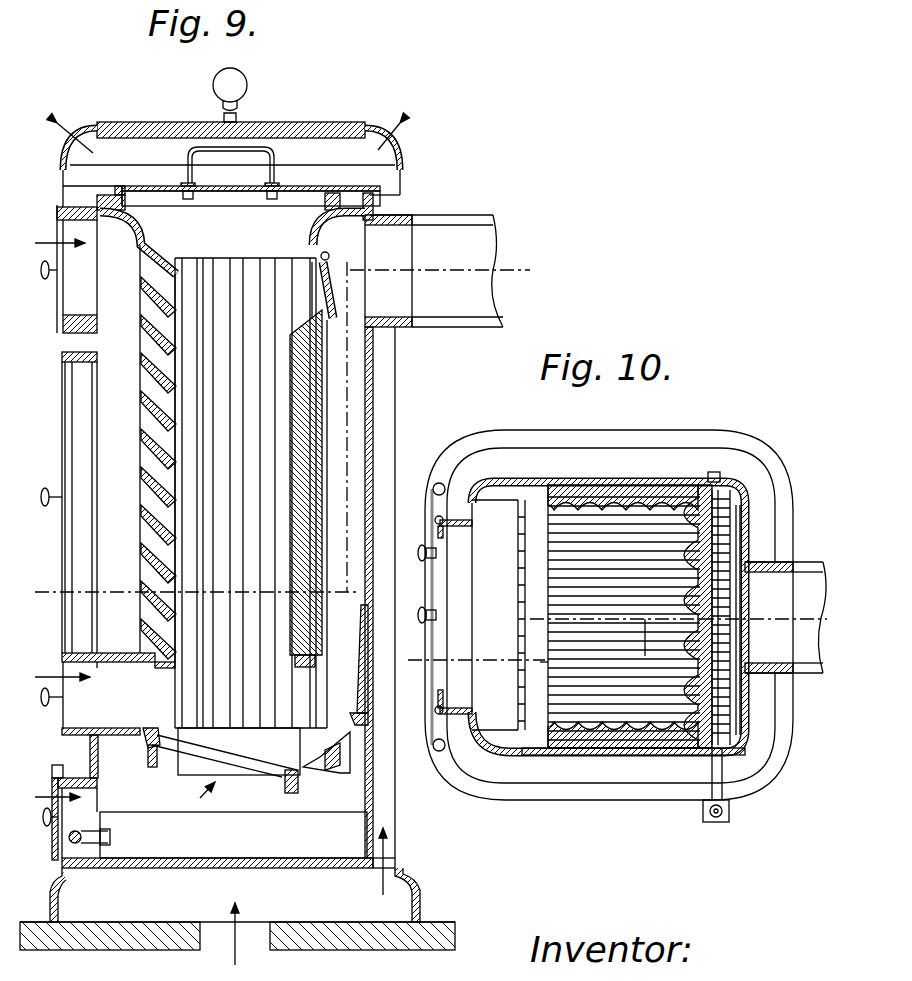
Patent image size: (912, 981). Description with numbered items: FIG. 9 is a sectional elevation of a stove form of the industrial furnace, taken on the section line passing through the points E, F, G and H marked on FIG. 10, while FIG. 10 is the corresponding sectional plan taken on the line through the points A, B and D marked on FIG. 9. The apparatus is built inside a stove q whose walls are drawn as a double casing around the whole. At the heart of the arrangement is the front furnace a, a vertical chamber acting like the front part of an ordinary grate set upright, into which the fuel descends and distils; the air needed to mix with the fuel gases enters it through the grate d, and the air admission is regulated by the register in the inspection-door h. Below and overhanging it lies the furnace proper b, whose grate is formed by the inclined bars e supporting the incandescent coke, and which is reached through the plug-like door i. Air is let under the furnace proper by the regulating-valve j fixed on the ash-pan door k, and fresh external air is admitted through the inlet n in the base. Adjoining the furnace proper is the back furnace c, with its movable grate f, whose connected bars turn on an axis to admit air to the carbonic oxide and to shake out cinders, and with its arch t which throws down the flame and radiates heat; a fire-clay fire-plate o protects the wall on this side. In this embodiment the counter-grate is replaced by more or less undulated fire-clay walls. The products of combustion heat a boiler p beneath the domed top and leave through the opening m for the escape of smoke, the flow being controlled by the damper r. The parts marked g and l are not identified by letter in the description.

In FIG. 9, the front furnace a is at (245, 493).
In FIG. 10, the front furnace a is at (629, 627).
In FIG. 9, the furnace proper b is at (212, 702).
In FIG. 9, the back furnace c is at (328, 487).
In FIG. 10, the back furnace c is at (751, 620).
In FIG. 9, the grate d is at (147, 453).
In FIG. 10, the grate d is at (530, 615).
In FIG. 9, the grate bars e is at (221, 763).
In FIG. 10, the grate bars e is at (624, 618).
In FIG. 9, the movable grate f is at (326, 764).
In FIG. 10, the movable grate f is at (705, 627).
In FIG. 9, the upper side chamber g is at (66, 269).
In FIG. 9, the inspection-door h is at (69, 502).
In FIG. 10, the inspection-door h is at (453, 615).
In FIG. 9, the door i is at (105, 694).
In FIG. 9, the regulating-valve j is at (72, 797).
In FIG. 10, the regulating-valve j is at (424, 617).
In FIG. 9, the ash-pan door k is at (233, 835).
In FIG. 9, the filling block l is at (285, 488).
In FIG. 10, the filling block l is at (655, 616).
In FIG. 9, the smoke opening m is at (434, 271).
In FIG. 10, the smoke opening m is at (785, 617).
In FIG. 9, the fresh air inlet n is at (237, 934).
In FIG. 9, the fire-clay fire-plate o is at (350, 665).
In FIG. 10, the fire-clay fire-plate o is at (749, 620).
In FIG. 9, the boiler p is at (251, 187).
In FIG. 9, the stove q is at (393, 592).
In FIG. 10, the stove q is at (599, 615).
In FIG. 9, the damper r is at (329, 285).
In FIG. 10, the arch t is at (725, 787).
In FIG. 9, the section line point A is at (195, 579).
In FIG. 9, the section line point B is at (355, 432).
In FIG. 9, the section line point D is at (441, 271).
In FIG. 10, the section line point E is at (474, 648).
In FIG. 10, the section line point F is at (539, 652).
In FIG. 10, the section line point G is at (614, 610).
In FIG. 10, the section line point H is at (763, 612).